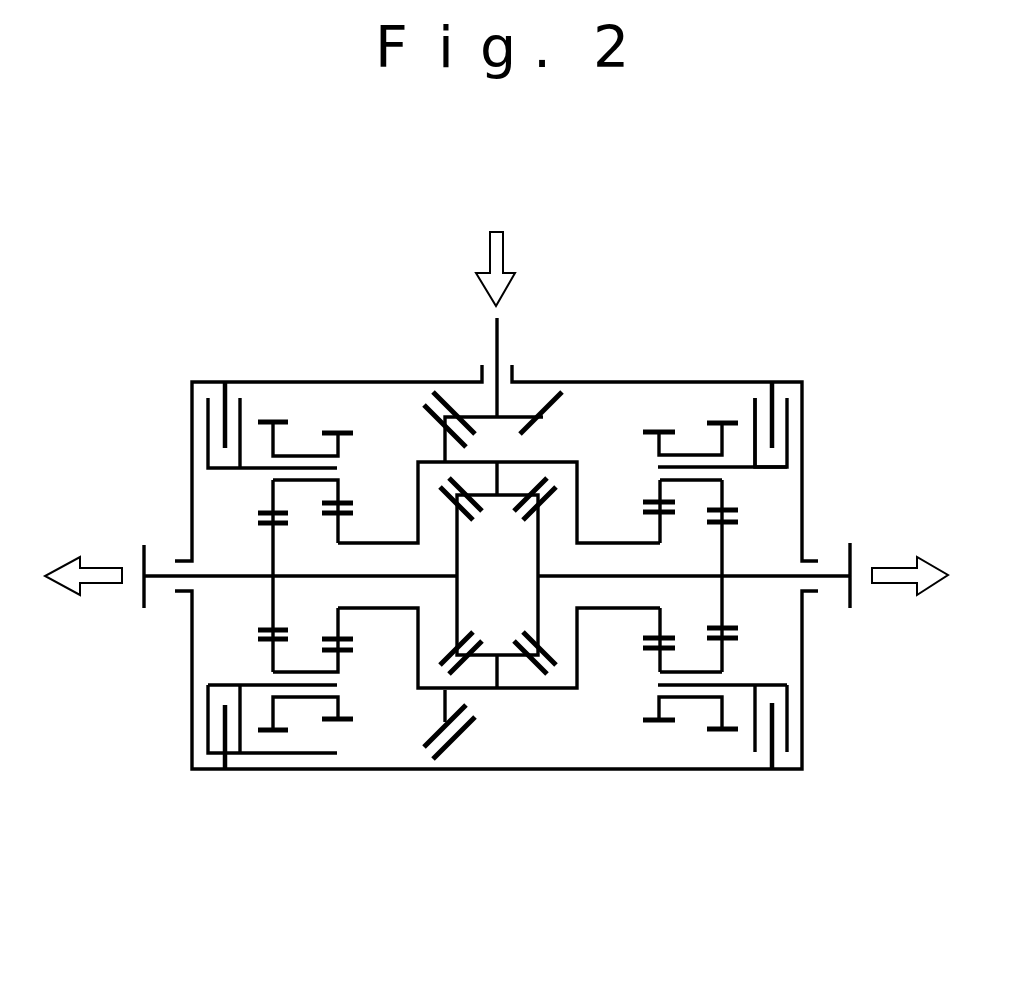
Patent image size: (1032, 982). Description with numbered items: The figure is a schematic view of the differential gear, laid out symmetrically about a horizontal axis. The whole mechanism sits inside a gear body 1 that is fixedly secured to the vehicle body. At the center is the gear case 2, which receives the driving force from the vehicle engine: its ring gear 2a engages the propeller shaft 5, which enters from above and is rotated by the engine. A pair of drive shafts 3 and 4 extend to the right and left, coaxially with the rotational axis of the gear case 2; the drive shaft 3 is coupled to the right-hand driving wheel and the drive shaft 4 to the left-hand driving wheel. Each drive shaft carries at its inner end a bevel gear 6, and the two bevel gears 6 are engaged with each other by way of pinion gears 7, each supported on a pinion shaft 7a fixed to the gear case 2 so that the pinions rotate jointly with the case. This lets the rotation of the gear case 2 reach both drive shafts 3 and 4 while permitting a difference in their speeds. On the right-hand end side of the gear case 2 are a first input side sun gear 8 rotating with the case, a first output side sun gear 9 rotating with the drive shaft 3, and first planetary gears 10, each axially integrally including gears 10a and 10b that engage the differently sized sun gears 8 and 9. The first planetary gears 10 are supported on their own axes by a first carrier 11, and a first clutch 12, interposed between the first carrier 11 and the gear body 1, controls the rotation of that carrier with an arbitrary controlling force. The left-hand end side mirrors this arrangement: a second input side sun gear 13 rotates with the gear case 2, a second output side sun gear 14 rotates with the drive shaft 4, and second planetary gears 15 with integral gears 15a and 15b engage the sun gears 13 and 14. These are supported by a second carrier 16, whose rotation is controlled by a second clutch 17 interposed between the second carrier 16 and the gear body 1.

The gear body 1 is at (425, 770).
The gear case 2 is at (518, 688).
The ring gear 2a is at (445, 416).
The drive shaft 3 is at (833, 573).
The drive shaft 4 is at (162, 572).
The propeller shaft 5 is at (498, 367).
The bevel gear 6 is at (437, 487).
The pinion gear 7 is at (500, 480).
The pinion shaft 7a is at (540, 463).
The first input side sun gear 8 is at (645, 645).
The first output side sun gear 9 is at (738, 638).
The first planetary gear 10 is at (688, 452).
The gear 10a is at (647, 432).
The gear 10b is at (732, 417).
The first carrier 11 is at (737, 462).
The first clutch 12 is at (777, 425).
The second input side sun gear 13 is at (355, 650).
The second output side sun gear 14 is at (257, 642).
The second planetary gear 15 is at (303, 452).
The gear 15a is at (352, 433).
The gear 15b is at (263, 422).
The second carrier 16 is at (253, 464).
The second clutch 17 is at (217, 423).